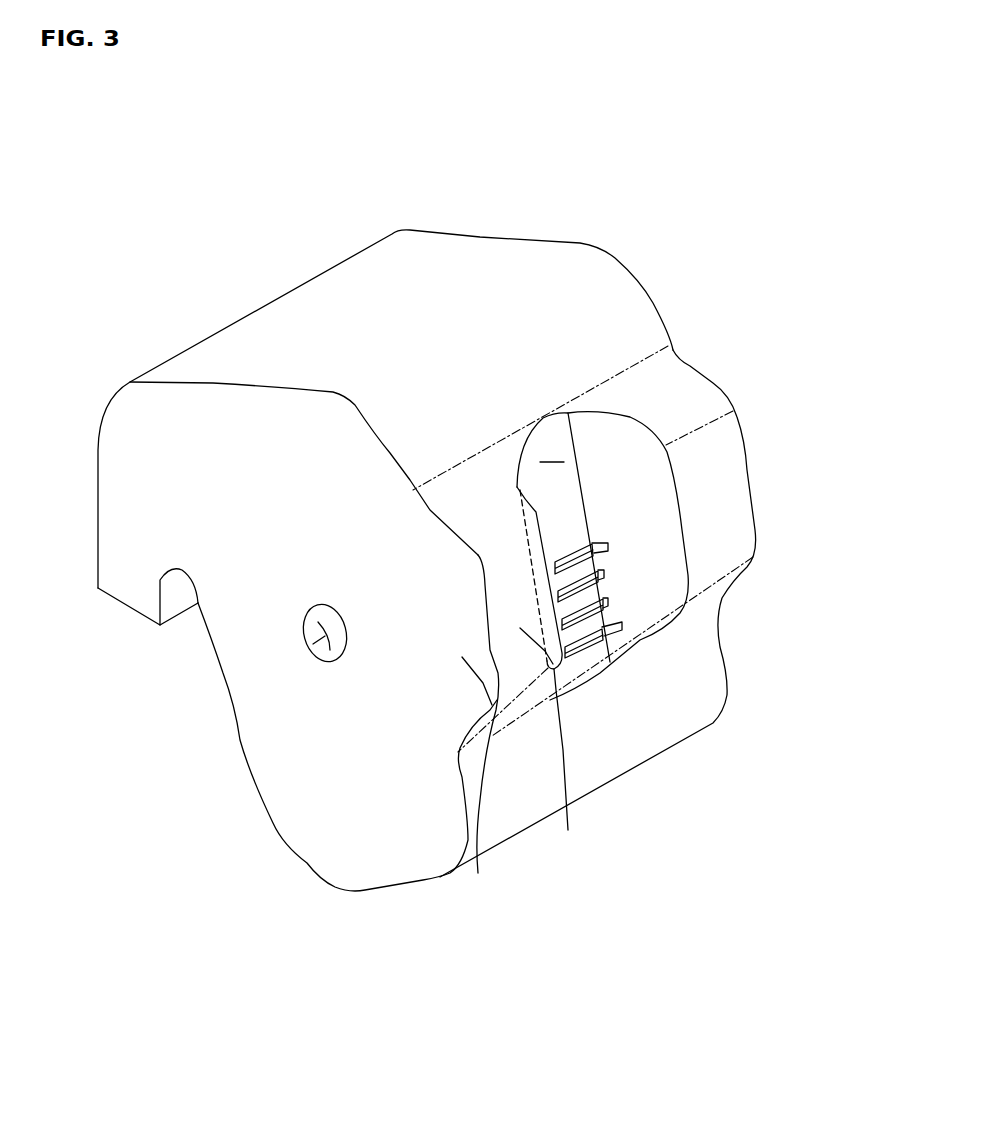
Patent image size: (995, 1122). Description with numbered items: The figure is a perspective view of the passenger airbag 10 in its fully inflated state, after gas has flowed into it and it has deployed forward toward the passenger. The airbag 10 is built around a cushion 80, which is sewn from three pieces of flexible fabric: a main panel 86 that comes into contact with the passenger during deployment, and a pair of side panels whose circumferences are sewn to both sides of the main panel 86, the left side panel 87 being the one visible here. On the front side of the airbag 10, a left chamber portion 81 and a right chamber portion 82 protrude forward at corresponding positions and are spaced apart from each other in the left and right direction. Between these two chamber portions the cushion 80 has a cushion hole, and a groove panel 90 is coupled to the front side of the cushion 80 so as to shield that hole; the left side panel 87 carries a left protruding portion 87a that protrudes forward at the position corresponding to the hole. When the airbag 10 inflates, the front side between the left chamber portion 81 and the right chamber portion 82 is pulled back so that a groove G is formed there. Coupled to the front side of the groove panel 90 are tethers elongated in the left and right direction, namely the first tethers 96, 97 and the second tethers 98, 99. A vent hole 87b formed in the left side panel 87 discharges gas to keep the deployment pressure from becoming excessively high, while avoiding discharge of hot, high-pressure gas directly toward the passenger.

The airbag 10 is at (126, 229).
The cushion 80 is at (653, 240).
The left chamber portion 81 is at (568, 830).
The right chamber portion 82 is at (707, 488).
The main panel 86 is at (313, 322).
The left side panel 87 is at (283, 753).
The left protruding portion 87a is at (478, 873).
The vent hole 87b is at (313, 644).
The groove panel 90 is at (575, 482).
The first tether 96 is at (606, 543).
The first tether 97 is at (622, 628).
The second tether 98 is at (604, 572).
The second tether 99 is at (604, 601).
The groove G is at (553, 460).